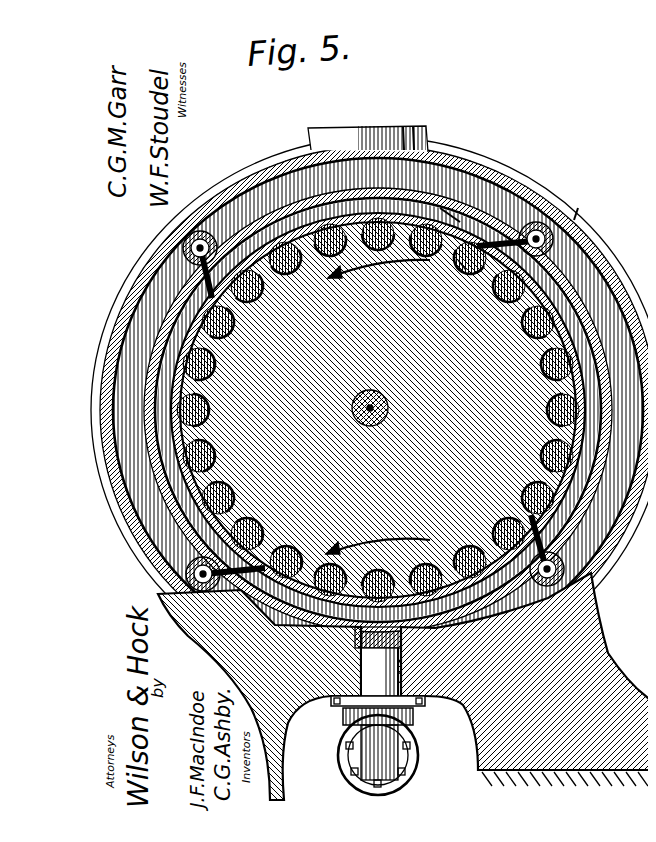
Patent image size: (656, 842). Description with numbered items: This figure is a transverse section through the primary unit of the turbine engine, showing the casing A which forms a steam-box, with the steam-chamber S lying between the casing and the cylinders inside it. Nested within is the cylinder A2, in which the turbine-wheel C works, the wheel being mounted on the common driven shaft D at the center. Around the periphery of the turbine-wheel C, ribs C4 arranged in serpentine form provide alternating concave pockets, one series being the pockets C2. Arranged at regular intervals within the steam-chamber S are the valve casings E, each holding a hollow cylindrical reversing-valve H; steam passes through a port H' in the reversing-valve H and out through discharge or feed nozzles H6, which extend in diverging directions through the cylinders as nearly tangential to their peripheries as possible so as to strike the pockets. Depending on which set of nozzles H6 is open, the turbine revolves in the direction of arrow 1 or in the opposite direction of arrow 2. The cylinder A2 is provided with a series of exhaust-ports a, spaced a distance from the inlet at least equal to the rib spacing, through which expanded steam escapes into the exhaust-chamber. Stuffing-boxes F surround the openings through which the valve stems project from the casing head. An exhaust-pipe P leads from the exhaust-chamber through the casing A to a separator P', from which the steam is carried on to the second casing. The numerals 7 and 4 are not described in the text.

The casing A is at (290, 158).
The cylinder A2 is at (468, 192).
The steam-chamber S is at (440, 205).
The discharge or feed nozzle H6 is at (522, 230).
The part 7 is at (570, 200).
The reversing-valve H is at (364, 408).
The valve casing or cylinder E is at (610, 586).
The exhaust-port a is at (342, 196).
The rib C4 is at (400, 212).
The part 4 is at (455, 258).
The arrow 1 is at (379, 275).
The turbine-wheel C is at (378, 410).
The pocket C2 is at (228, 318).
The shaft D is at (382, 400).
The arrow 2 is at (378, 538).
The port H' is at (366, 424).
The stuffing-box F is at (403, 686).
The exhaust-pipe P is at (387, 676).
The separator P' is at (400, 755).